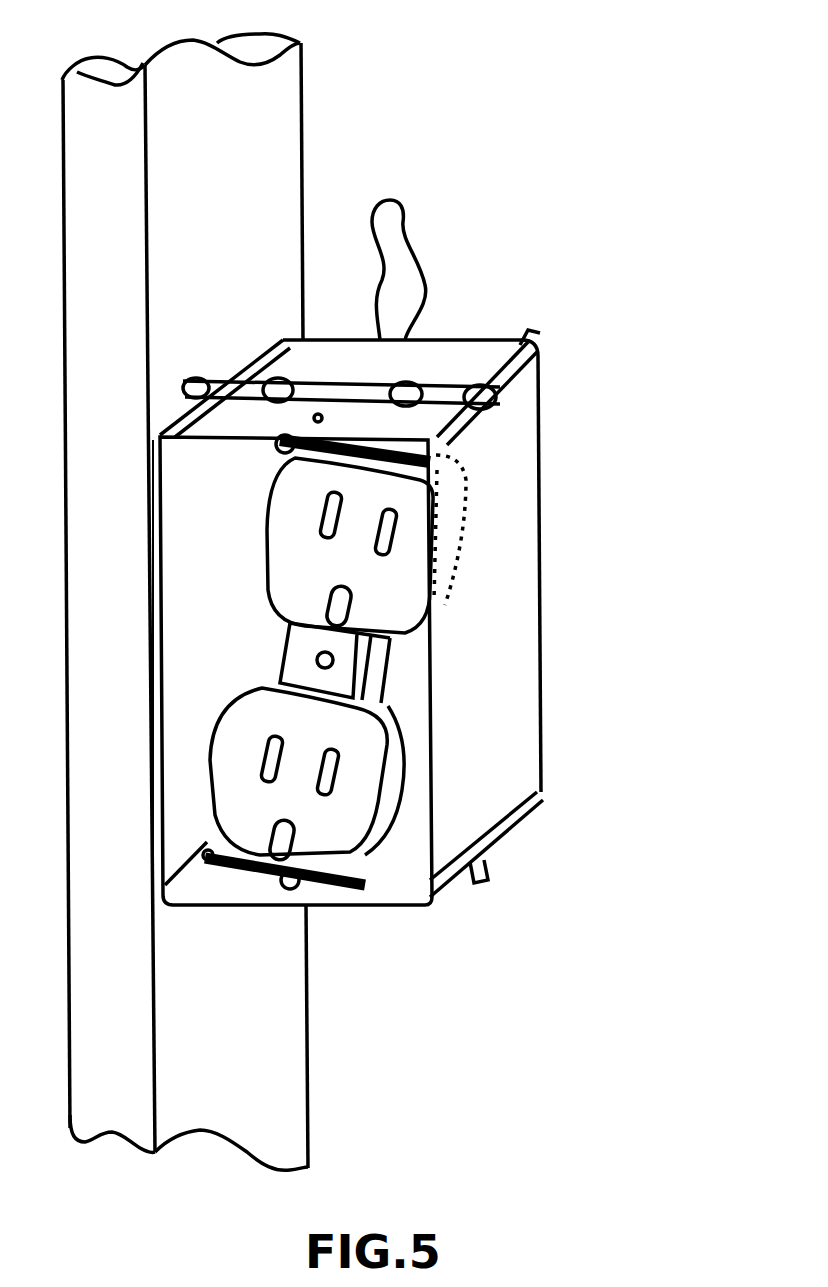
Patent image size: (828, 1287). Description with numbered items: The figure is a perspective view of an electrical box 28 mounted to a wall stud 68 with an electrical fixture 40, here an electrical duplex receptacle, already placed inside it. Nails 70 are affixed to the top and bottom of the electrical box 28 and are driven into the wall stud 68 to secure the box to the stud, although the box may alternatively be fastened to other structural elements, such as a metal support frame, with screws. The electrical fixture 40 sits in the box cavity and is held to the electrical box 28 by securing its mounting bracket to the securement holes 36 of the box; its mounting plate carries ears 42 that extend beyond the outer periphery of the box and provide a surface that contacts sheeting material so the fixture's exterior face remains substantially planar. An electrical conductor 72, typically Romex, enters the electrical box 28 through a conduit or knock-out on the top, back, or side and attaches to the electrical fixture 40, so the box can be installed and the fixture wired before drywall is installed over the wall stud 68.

The electrical box 28 is at (372, 562).
The securement holes 36 is at (348, 1027).
The electrical fixture 40 is at (517, 550).
The ears 42 is at (453, 468).
The wall stud 68 is at (294, 585).
The nails 70 is at (579, 602).
The electrical conductor 72 is at (469, 238).